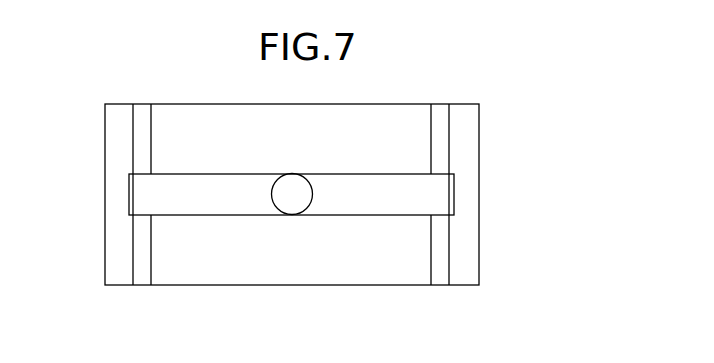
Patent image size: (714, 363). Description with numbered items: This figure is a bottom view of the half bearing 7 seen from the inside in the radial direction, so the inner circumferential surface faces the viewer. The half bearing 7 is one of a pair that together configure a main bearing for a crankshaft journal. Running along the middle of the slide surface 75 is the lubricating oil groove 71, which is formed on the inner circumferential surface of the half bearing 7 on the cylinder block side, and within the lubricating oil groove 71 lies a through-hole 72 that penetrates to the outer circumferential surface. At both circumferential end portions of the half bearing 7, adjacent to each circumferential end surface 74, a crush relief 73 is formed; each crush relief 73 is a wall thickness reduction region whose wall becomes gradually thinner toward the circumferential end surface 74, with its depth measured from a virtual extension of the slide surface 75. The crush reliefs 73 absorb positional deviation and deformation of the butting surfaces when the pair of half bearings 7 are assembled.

The half bearing 7 is at (496, 130).
The lubricating oil groove 71 is at (380, 186).
The through-hole 72 is at (292, 186).
The crush relief 73 is at (143, 275).
The circumferential end surface 74 is at (113, 250).
The slide surface 75 is at (295, 275).